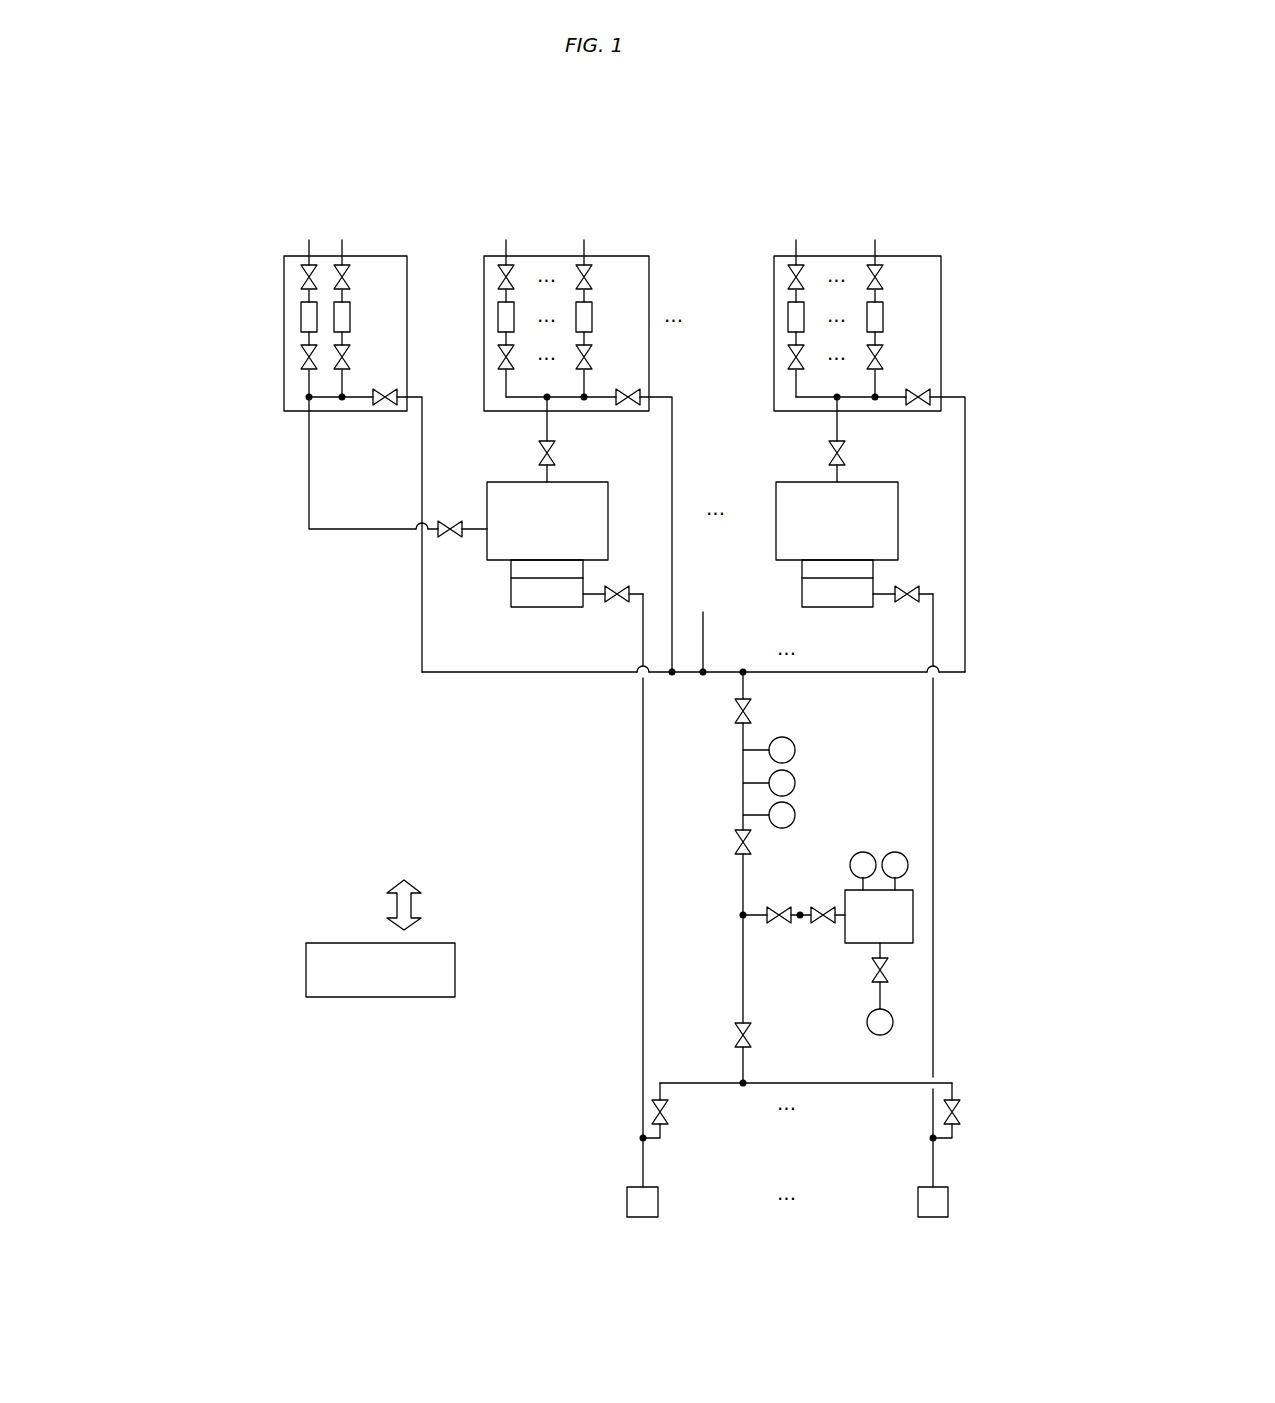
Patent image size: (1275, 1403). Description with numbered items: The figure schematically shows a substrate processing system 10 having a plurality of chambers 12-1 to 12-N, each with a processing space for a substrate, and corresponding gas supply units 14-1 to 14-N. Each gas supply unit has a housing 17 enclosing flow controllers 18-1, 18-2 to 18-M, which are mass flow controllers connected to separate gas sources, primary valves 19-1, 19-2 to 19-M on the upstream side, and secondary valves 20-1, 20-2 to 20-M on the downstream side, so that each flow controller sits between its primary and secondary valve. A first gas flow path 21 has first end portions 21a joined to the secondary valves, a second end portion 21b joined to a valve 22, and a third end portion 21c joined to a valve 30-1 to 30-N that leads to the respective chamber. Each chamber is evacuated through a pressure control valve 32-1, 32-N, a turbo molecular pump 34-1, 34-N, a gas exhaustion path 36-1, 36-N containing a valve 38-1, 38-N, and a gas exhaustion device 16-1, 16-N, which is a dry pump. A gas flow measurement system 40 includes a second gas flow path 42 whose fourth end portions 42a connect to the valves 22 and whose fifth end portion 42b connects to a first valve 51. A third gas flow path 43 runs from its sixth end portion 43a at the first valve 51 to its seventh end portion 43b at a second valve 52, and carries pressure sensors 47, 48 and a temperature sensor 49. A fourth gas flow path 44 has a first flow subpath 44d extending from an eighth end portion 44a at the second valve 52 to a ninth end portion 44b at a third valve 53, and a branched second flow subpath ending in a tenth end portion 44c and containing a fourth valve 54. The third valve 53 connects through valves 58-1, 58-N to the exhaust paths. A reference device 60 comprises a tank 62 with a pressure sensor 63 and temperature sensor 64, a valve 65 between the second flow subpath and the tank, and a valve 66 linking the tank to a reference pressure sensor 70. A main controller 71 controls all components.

The substrate processing system 10 is at (928, 148).
The chamber 12-1 is at (608, 535).
The chamber 12-N is at (898, 535).
The gas supply unit 14-1 is at (657, 204).
The gas supply unit 14-N is at (947, 204).
The gas exhaustion device 16-1 is at (624, 1204).
The gas exhaustion device 16-N is at (916, 1204).
The housing 17 is at (384, 256).
The flow controller 18-1 is at (300, 318).
The flow controller 18-2 is at (351, 318).
The flow controller 18-M is at (612, 303).
The primary valve 19-1 is at (300, 280).
The primary valve 19-2 is at (350, 275).
The primary valve 19-M is at (592, 275).
The secondary valve 20-1 is at (497, 358).
The secondary valve 20-2 is at (300, 358).
The secondary valve 20-M is at (614, 338).
The first gas flow path 21 is at (328, 399).
The first end portion 21a is at (303, 375).
The second end portion 21b is at (365, 400).
The third end portion 21c is at (446, 522).
The valve 22 is at (388, 408).
The valve 30-1 is at (556, 455).
The valve 30-N is at (846, 455).
The pressure control valve 32-1 is at (508, 568).
The pressure control valve 32-N is at (798, 568).
The turbo molecular pump 34-1 is at (532, 608).
The turbo molecular pump 34-N is at (822, 608).
The gas exhaustion path 36-1 is at (640, 742).
The gas exhaustion path 36-N is at (936, 792).
The valve 38-1 is at (617, 604).
The valve 38-N is at (907, 604).
The gas flow measurement system 40 is at (683, 795).
The second gas flow path 42 is at (886, 676).
The fourth end portion 42a is at (420, 410).
The fifth end portion 42b is at (738, 692).
The third gas flow path 43 is at (741, 762).
The sixth end portion 43a is at (738, 727).
The seventh end portion 43b is at (738, 828).
The fourth gas flow path 44 is at (686, 866).
The eighth end portion 44a is at (750, 855).
The ninth end portion 44b is at (738, 1026).
The tenth end portion 44c is at (740, 915).
The first flow subpath 44d is at (743, 868).
The pressure sensor 47 is at (796, 749).
The pressure sensor 48 is at (796, 782).
The temperature sensor 49 is at (796, 814).
The first valve 51 is at (752, 708).
The second valve 52 is at (753, 840).
The third valve 53 is at (752, 1032).
The fourth valve 54 is at (776, 925).
The valve 58-1 is at (668, 1118).
The valve 58-N is at (960, 1118).
The reference device 60 is at (928, 931).
The tank 62 is at (915, 905).
The pressure sensor 63 is at (866, 852).
The temperature sensor 64 is at (897, 852).
The valve 65 is at (824, 925).
The valve 66 is at (887, 968).
The reference pressure sensor 70 is at (890, 1032).
The main controller 71 is at (404, 998).